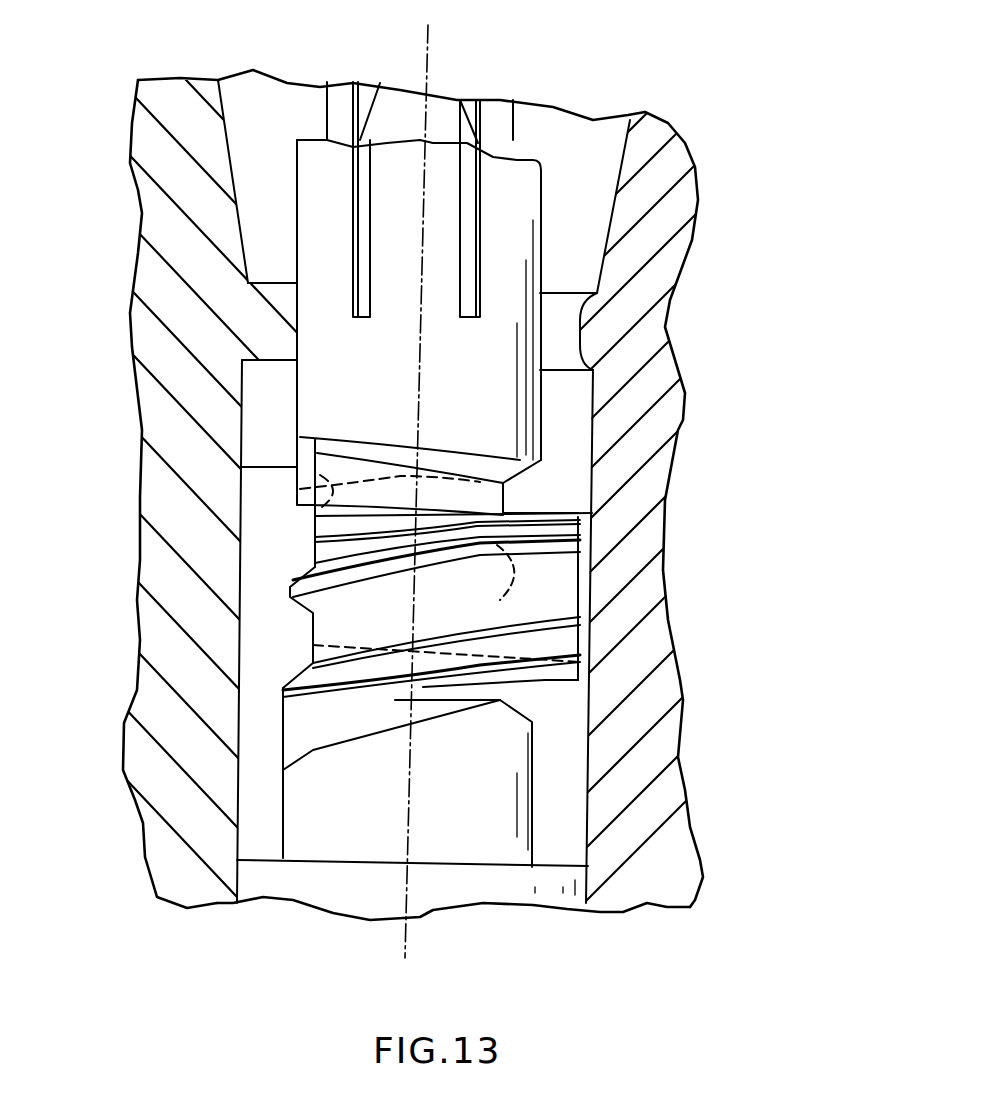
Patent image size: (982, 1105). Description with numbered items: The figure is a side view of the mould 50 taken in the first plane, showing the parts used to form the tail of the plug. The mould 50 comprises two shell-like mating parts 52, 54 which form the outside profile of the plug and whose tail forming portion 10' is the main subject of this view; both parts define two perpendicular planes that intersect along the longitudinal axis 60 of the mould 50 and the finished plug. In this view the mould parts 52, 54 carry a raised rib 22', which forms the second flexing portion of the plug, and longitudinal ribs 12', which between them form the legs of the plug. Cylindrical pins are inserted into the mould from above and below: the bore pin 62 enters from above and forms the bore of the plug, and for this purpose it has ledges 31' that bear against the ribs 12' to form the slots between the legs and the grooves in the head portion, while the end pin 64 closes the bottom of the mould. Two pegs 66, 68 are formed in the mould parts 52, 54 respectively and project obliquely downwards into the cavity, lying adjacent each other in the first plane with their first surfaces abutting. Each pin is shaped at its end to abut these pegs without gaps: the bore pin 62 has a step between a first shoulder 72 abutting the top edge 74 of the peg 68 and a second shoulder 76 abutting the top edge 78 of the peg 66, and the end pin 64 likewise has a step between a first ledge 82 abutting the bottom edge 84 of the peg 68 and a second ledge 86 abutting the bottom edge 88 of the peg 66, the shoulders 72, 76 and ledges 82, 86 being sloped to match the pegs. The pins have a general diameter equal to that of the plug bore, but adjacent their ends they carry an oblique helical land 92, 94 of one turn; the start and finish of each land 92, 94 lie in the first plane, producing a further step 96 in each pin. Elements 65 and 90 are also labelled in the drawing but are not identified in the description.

The tail forming portion 10' is at (511, 833).
The longitudinal ribs 12' is at (452, 76).
The raised rib 22' is at (173, 321).
The ledges 31' is at (495, 182).
The mould 50 is at (738, 387).
The mating part 52 is at (633, 298).
The mating part 54 is at (177, 222).
The longitudinal axis 60 is at (405, 948).
The bore pin 62 is at (510, 233).
The end pin 64 is at (490, 823).
The threaded insert 65 is at (580, 602).
The peg 66 is at (560, 573).
The peg 68 is at (257, 558).
The first shoulder 72 is at (300, 517).
The top edge 74 is at (268, 462).
The second shoulder 76 is at (520, 517).
The top edge 78 is at (547, 517).
The first ledge 82 is at (370, 645).
The bottom edge 84 is at (277, 637).
The second ledge 86 is at (282, 704).
The bottom edge 88 is at (540, 685).
The thread gap 90 is at (467, 547).
The oblique helical land 92 is at (473, 473).
The oblique helical land 94 is at (387, 740).
The further step 96 is at (300, 489).